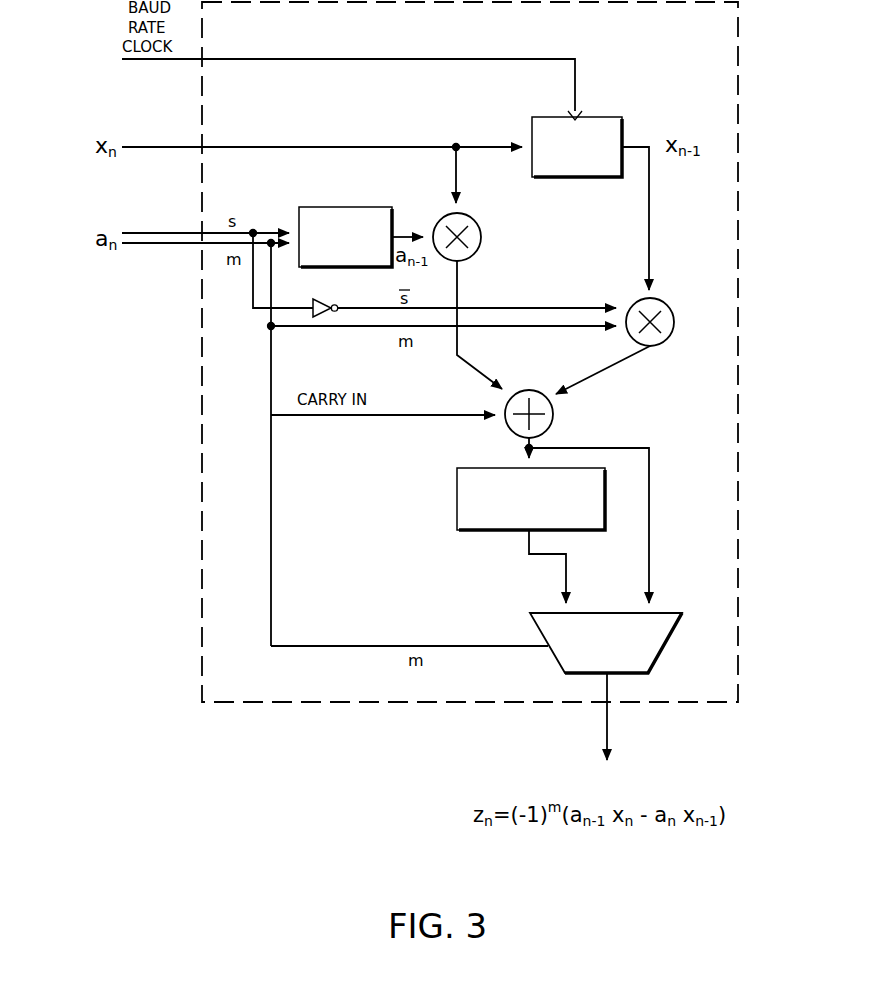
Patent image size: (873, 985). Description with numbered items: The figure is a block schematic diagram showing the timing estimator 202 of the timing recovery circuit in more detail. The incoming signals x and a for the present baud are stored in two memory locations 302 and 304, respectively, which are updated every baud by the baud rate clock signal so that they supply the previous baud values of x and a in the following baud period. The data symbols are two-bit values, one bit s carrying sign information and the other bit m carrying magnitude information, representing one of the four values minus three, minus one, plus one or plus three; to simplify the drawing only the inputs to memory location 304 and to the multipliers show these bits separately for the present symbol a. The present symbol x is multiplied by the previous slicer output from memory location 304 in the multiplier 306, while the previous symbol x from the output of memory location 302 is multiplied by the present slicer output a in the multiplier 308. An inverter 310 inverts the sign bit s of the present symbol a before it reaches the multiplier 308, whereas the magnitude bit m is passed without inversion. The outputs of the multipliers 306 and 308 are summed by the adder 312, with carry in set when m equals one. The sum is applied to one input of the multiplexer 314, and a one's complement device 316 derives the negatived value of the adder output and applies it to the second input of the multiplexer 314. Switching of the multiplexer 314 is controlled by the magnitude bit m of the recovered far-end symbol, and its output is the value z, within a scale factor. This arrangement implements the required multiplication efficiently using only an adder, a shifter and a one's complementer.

The timing estimator 202 is at (743, 712).
The memory location 302 is at (612, 117).
The memory location 304 is at (351, 205).
The multiplier 306 is at (481, 234).
The multiplier 308 is at (667, 339).
The inverter 310 is at (324, 300).
The adder 312 is at (553, 410).
The multiplexer 314 is at (668, 612).
The one's complement device 316 is at (457, 500).